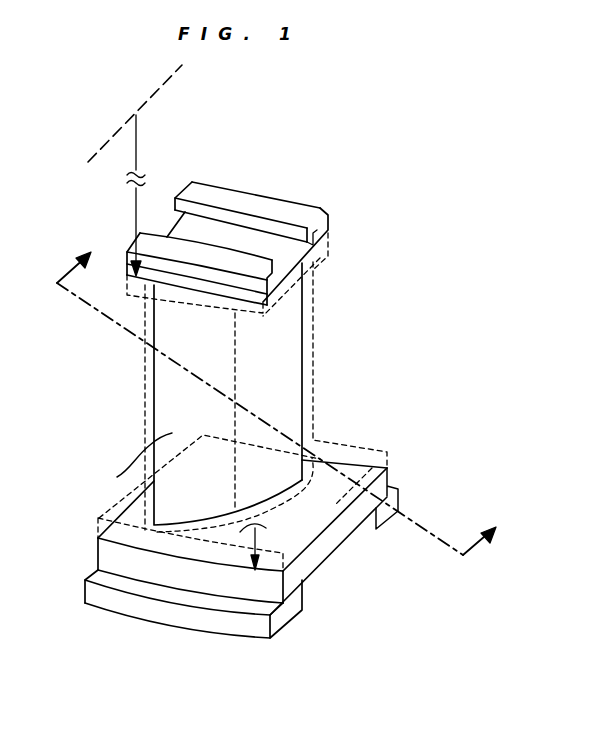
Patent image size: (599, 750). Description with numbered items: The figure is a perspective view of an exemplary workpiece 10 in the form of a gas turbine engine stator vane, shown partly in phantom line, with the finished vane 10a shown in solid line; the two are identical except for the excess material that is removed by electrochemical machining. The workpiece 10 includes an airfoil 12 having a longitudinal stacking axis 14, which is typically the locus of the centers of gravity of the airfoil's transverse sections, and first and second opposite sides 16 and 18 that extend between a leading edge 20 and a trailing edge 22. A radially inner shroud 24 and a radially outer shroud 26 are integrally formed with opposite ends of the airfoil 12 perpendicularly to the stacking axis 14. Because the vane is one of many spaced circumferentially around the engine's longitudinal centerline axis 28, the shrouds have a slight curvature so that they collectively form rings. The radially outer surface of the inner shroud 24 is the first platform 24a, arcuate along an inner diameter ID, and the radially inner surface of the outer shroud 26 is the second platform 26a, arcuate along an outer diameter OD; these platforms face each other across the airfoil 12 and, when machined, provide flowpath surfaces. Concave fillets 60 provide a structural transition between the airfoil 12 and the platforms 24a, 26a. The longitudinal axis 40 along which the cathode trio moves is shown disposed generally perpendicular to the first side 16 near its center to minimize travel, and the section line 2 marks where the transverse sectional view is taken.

The workpiece 10 is at (382, 429).
The finished vane 10a is at (398, 492).
The airfoil 12 is at (308, 336).
The stacking axis 14 is at (237, 382).
The first side 16 is at (117, 477).
The second side 18 is at (192, 396).
The leading edge 20 is at (145, 427).
The trailing edge 22 is at (313, 377).
The radially inner shroud 24 is at (322, 210).
The first platform 24a is at (324, 258).
The radially outer shroud 26 is at (97, 552).
The second platform 26a is at (262, 548).
The longitudinal centerline axis 28 is at (100, 145).
The longitudinal axis 40 is at (266, 423).
The concave fillets 60 is at (190, 512).
The section line 2- 2 is at (286, 394).
The inner diameter ID is at (133, 218).
The outer diameter OD is at (262, 541).